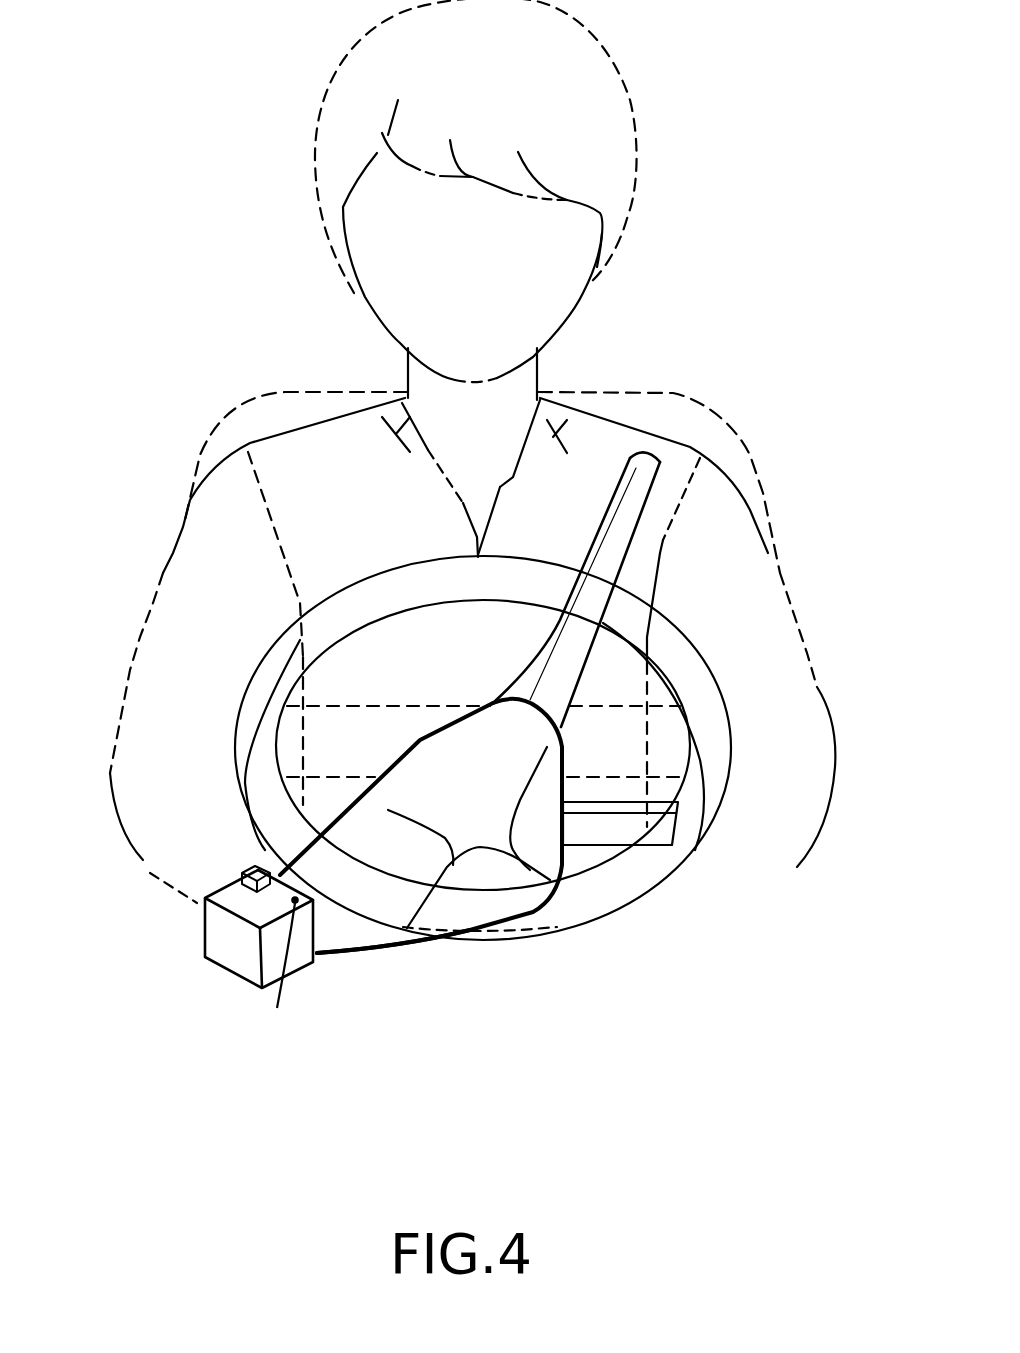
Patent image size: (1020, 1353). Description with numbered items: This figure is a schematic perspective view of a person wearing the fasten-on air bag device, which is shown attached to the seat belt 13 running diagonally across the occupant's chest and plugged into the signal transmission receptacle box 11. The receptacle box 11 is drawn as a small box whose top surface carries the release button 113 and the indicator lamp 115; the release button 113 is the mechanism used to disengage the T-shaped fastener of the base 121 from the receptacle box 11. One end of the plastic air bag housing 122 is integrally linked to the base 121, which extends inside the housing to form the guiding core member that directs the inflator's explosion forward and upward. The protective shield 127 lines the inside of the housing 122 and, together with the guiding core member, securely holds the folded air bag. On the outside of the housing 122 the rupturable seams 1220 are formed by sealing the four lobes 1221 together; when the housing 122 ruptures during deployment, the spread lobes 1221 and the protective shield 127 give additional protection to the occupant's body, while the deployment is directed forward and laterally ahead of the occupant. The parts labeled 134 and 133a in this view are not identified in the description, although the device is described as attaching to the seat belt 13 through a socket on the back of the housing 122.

The signal transmission receptacle box 11 is at (218, 934).
The release button 113 is at (242, 874).
The indicator lamp 115 is at (274, 976).
The base 121 is at (340, 933).
The plastic air bag housing 122 is at (507, 928).
The rupturable seams 1220 is at (548, 893).
The lobes 1221 is at (428, 862).
The protective shield 127 is at (525, 688).
The seat belt 13 is at (655, 495).
The strap portion 134 is at (640, 540).
The buckle 133a is at (567, 847).